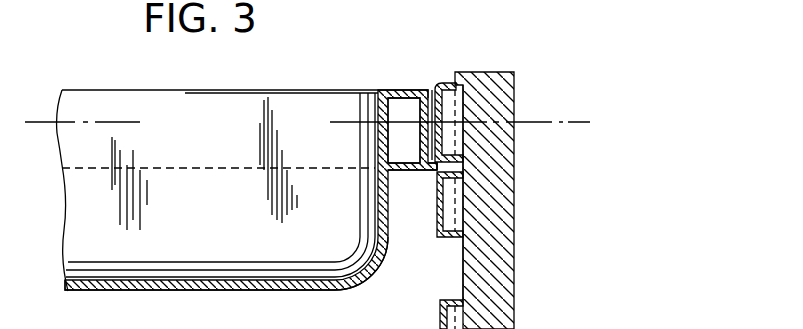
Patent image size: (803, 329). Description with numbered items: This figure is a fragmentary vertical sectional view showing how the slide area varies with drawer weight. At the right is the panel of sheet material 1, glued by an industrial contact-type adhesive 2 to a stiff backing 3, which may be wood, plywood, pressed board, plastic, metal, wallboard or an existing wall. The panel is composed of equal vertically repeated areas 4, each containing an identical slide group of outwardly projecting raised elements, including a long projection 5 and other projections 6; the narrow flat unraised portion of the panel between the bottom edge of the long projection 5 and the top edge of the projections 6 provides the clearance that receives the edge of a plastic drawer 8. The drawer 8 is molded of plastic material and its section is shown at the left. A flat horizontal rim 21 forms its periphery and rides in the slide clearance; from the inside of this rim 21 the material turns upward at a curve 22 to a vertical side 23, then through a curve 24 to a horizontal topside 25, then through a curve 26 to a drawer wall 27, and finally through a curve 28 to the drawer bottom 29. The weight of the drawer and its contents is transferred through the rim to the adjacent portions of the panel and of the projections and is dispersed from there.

The panel of sheet material 1 is at (426, 239).
The industrial contact-type adhesive 2 is at (460, 74).
The stiff backing 3 is at (500, 205).
The vertically repeated area 4 is at (38, 118).
The long projection 5 is at (438, 83).
The projection 6 is at (431, 218).
The plastic drawer 8 is at (248, 85).
The flat horizontal rim 21 is at (438, 172).
The curve 22 is at (437, 166).
The vertical side 23 is at (420, 126).
The curve 24 is at (432, 89).
The horizontal topside 25 is at (406, 90).
The curve 26 is at (379, 90).
The drawer wall 27 is at (376, 210).
The curve 28 is at (366, 282).
The drawer bottom 29 is at (232, 291).